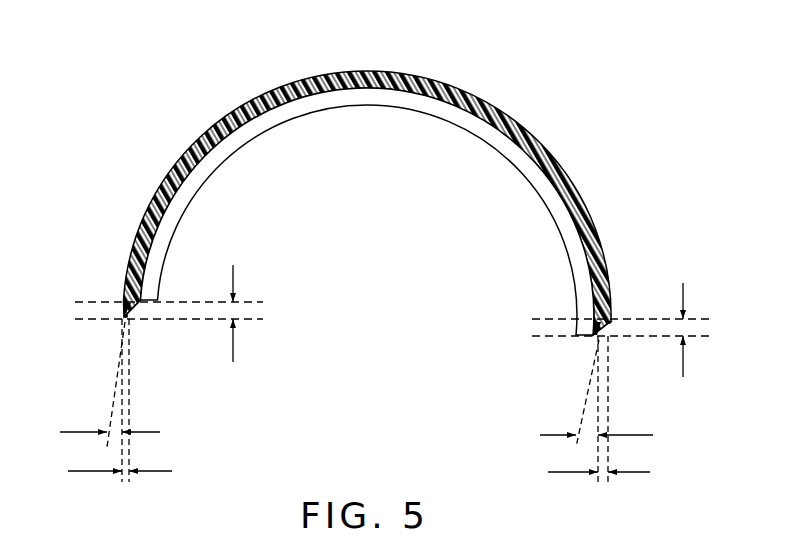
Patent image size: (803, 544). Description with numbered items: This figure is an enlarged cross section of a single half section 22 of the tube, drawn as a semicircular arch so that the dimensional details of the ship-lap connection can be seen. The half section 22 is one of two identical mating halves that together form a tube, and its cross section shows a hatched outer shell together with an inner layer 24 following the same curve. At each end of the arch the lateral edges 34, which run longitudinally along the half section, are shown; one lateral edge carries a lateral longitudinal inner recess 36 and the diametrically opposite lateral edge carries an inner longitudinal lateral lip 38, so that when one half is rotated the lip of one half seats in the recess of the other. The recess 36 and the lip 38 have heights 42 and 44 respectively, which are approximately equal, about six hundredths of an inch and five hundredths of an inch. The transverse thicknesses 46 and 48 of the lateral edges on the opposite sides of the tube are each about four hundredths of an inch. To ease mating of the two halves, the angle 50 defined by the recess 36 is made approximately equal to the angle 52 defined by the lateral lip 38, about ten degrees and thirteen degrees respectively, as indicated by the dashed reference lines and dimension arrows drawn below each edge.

The half section 22 is at (548, 152).
The inner layer 24 is at (230, 145).
The lateral edge 34 is at (126, 320).
The lateral longitudinal inner recess 36 is at (140, 304).
The inner longitudinal lateral lip 38 is at (596, 337).
The height of the lateral recess 42 is at (233, 347).
The height of the lateral lip 44 is at (688, 293).
The thickness of the lateral edge 46 is at (172, 471).
The thickness of the lateral edge 48 is at (643, 472).
The angle defined by the recess 50 is at (160, 432).
The angle defined by the lateral lip 52 is at (637, 435).